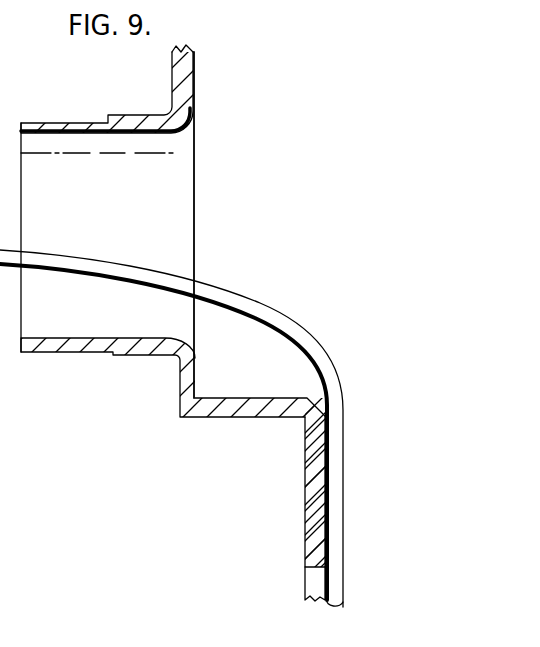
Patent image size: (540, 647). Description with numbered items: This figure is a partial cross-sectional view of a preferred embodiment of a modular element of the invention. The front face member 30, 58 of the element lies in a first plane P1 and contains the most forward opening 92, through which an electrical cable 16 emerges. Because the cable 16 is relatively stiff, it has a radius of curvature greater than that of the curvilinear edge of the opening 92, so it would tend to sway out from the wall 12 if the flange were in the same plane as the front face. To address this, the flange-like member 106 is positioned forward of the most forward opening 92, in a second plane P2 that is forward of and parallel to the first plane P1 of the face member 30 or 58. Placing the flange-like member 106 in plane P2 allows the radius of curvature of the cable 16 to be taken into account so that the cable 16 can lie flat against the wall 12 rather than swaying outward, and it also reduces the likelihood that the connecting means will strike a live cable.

The first plane P1 is at (206, 71).
The front face member 30 is at (178, 113).
The front face member 58 is at (205, 107).
The opening 92 is at (194, 175).
The electrical cable 16 is at (285, 308).
The second plane P2 is at (292, 487).
The flange-like member 106 is at (292, 531).
The wall 12 is at (292, 581).